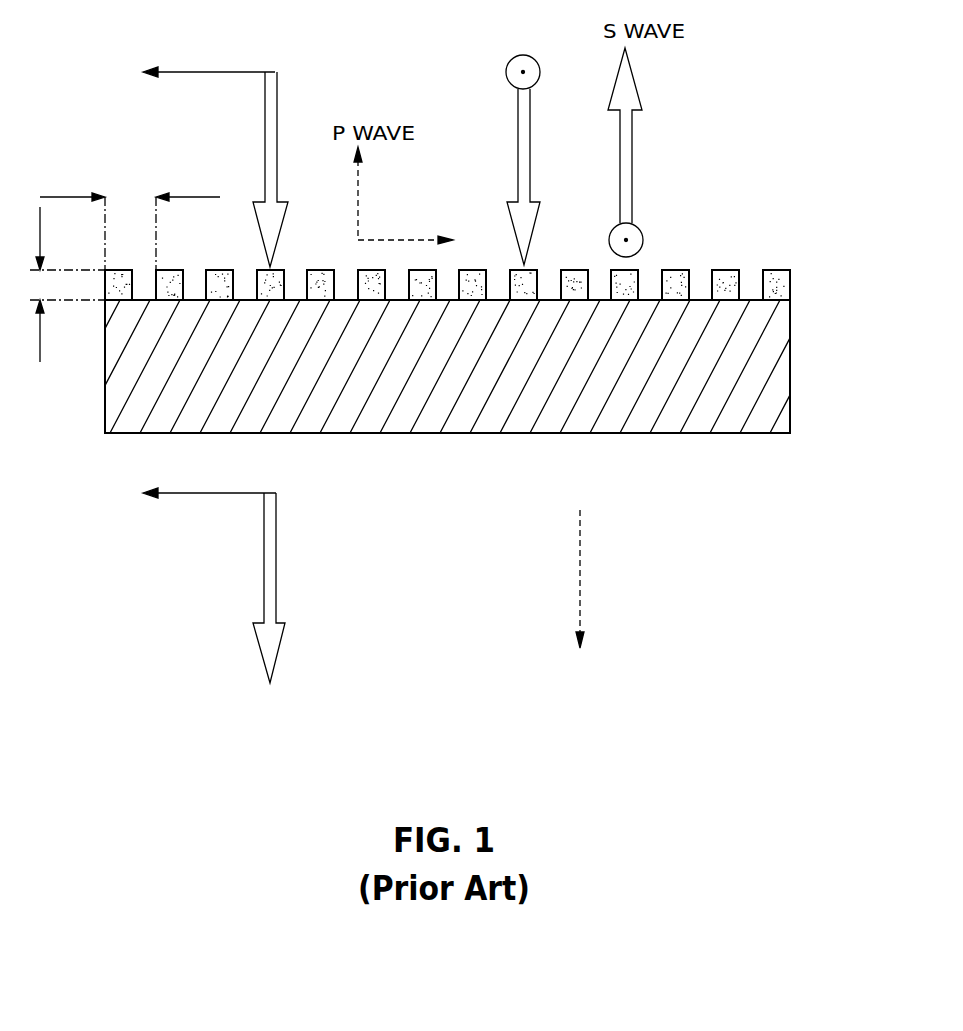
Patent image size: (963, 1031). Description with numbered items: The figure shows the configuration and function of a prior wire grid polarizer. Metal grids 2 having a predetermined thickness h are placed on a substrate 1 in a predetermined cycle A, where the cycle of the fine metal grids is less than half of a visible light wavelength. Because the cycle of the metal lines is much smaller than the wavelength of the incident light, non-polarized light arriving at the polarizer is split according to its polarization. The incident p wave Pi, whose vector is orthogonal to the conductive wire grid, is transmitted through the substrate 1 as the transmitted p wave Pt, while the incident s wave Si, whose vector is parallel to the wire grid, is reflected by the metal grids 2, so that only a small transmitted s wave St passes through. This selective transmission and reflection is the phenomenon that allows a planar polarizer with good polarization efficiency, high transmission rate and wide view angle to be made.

The substrate 1 is at (790, 367).
The metal grids 2 is at (790, 282).
The cycle A is at (130, 222).
The thickness h is at (60, 284).
The incident P wave Pi is at (199, 152).
The incident S wave Si is at (525, 142).
The transmitted P wave Pt is at (228, 600).
The transmitted S wave St is at (596, 595).